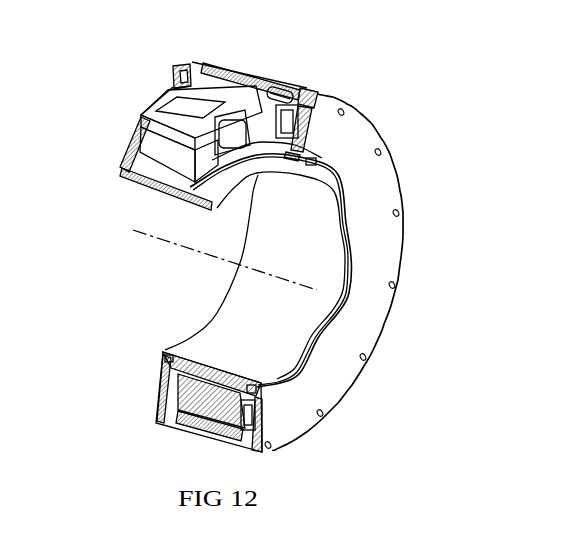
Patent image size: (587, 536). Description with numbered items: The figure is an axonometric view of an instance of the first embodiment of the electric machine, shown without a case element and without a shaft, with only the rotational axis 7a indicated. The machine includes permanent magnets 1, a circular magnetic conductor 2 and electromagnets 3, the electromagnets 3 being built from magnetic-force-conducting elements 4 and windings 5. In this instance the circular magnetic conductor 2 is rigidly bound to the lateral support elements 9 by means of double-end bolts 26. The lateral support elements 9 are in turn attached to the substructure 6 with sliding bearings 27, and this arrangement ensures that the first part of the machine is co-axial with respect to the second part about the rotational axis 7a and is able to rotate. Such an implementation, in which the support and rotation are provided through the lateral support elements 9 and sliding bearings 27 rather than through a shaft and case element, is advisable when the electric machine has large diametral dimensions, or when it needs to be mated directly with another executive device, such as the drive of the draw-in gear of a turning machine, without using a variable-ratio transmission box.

The permanent magnets 1 is at (193, 98).
The circular magnetic conductor 2 is at (238, 75).
The electromagnets 3 is at (138, 83).
The magnetic-force-conducting elements of electromagnets 4 is at (175, 148).
The windings of electromagnets 5 is at (235, 138).
The substructure 6 is at (317, 227).
The rotational axis 7a is at (165, 243).
The lateral support elements 9 is at (128, 155).
The double-end bolts 26 is at (298, 87).
The sliding bearings 27 is at (317, 165).